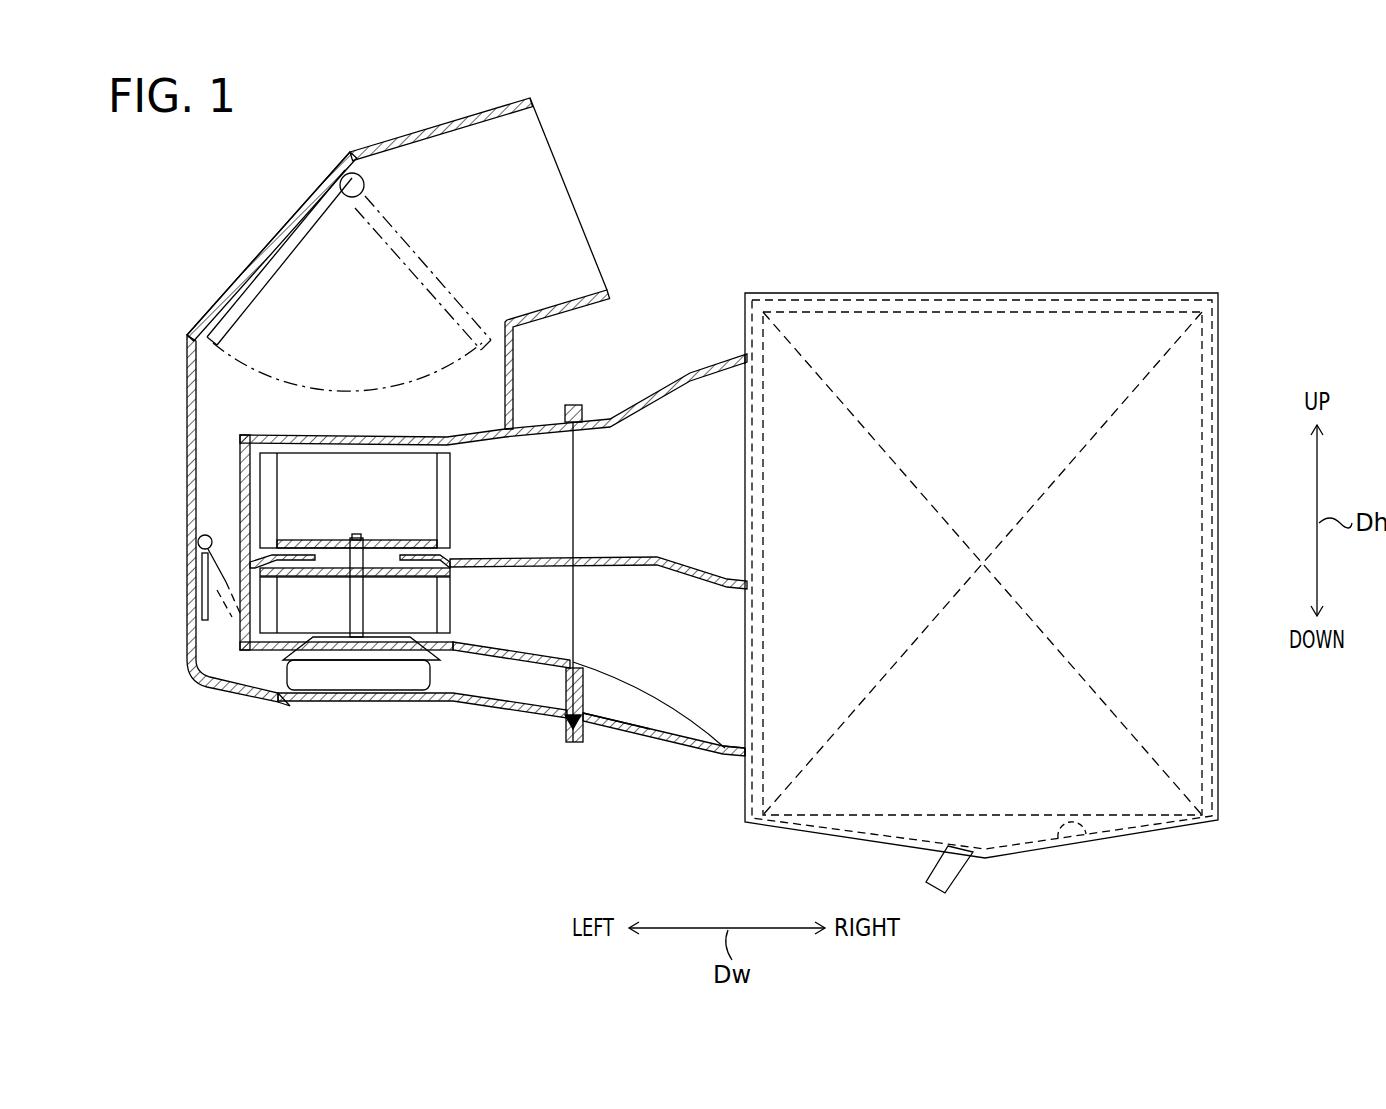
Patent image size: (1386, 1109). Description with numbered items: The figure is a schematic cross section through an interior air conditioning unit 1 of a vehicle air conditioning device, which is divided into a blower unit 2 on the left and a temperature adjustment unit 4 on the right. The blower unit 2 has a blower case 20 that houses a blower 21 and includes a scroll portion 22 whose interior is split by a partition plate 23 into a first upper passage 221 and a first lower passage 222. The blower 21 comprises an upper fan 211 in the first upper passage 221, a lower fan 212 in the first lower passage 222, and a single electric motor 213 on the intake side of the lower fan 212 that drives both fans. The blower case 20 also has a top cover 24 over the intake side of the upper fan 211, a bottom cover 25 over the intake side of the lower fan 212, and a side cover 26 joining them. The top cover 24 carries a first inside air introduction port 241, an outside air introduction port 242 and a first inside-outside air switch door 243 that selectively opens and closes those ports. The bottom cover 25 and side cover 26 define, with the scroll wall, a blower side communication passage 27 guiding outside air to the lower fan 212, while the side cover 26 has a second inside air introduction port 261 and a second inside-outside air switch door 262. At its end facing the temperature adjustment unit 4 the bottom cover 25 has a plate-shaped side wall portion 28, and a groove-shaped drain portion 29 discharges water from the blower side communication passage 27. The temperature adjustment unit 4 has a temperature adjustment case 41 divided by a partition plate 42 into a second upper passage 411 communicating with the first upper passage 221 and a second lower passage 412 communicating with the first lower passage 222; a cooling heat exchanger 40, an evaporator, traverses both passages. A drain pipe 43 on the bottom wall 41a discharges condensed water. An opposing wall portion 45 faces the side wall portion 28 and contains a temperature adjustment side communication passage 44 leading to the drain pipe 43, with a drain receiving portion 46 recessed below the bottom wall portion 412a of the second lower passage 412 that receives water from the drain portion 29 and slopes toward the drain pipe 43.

The interior air conditioning unit 1 is at (1136, 200).
The blower unit 2 is at (183, 271).
The blower case 20 is at (181, 438).
The blower 21 is at (248, 495).
The upper fan 211 is at (247, 520).
The lower fan 212 is at (262, 618).
The electric motor 213 is at (333, 684).
The scroll portion 22 is at (490, 666).
The first upper passage 221 is at (497, 492).
The first lower passage 222 is at (472, 618).
The partition plate 23 is at (543, 557).
The top cover 24 is at (188, 367).
The first inside air introduction port 241 is at (268, 247).
The outside air introduction port 242 is at (437, 243).
The first inside-outside air switch door 243 is at (307, 233).
The bottom cover 25 is at (387, 702).
The side cover 26 is at (188, 643).
The second inside air introduction port 261 is at (193, 573).
The second inside-outside air switch door 262 is at (203, 598).
The blower side communication passage 27 is at (262, 670).
The side wall portion 28 is at (556, 680).
The drain portion 29 is at (568, 697).
The temperature adjustment unit 4 is at (1004, 276).
The cooling heat exchanger 40 is at (1213, 330).
The temperature adjustment case 41 is at (820, 289).
The second upper passage 411 is at (677, 457).
The second lower passage 412 is at (662, 641).
The bottom wall portion 412a is at (723, 757).
The bottom wall 41a is at (1083, 845).
The partition plate 42 is at (610, 557).
The drain pipe 43 is at (960, 877).
The temperature adjustment side communication passage 44 is at (633, 706).
The opposing wall portion 45 is at (580, 690).
The drain receiving portion 46 is at (615, 705).